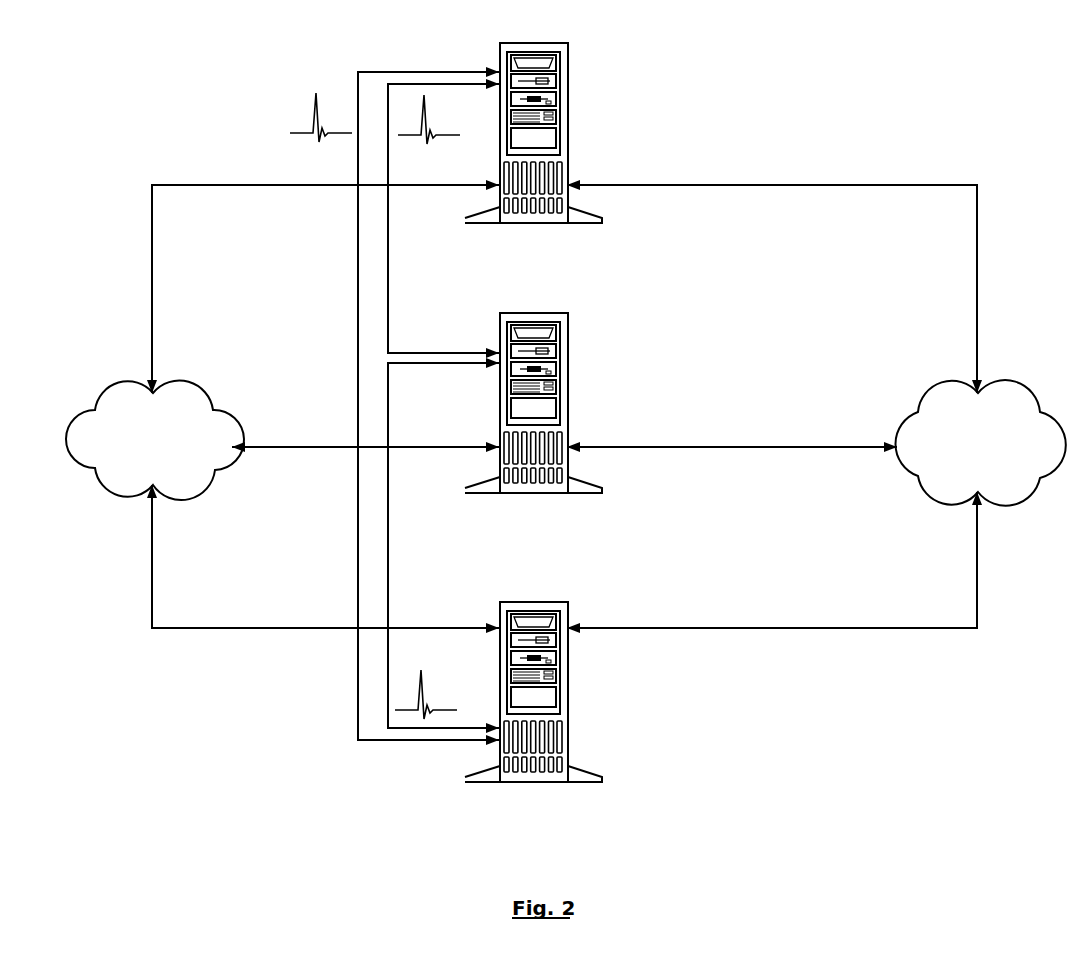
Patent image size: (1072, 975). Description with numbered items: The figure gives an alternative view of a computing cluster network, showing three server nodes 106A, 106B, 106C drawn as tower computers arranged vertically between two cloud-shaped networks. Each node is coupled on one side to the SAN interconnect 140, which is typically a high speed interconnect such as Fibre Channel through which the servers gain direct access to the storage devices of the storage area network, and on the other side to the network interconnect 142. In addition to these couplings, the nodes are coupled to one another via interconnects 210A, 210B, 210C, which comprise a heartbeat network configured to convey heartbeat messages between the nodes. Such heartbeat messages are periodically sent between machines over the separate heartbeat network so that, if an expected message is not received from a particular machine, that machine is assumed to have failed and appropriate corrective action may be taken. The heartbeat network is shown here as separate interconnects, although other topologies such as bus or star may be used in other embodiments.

The node 106A is at (533, 148).
The node 106B is at (533, 418).
The node 106C is at (533, 707).
The SAN interconnect 140 is at (139, 459).
The network interconnect 142 is at (965, 475).
The interconnect 210A is at (357, 103).
The interconnect 210B is at (388, 303).
The interconnect 210C is at (388, 521).